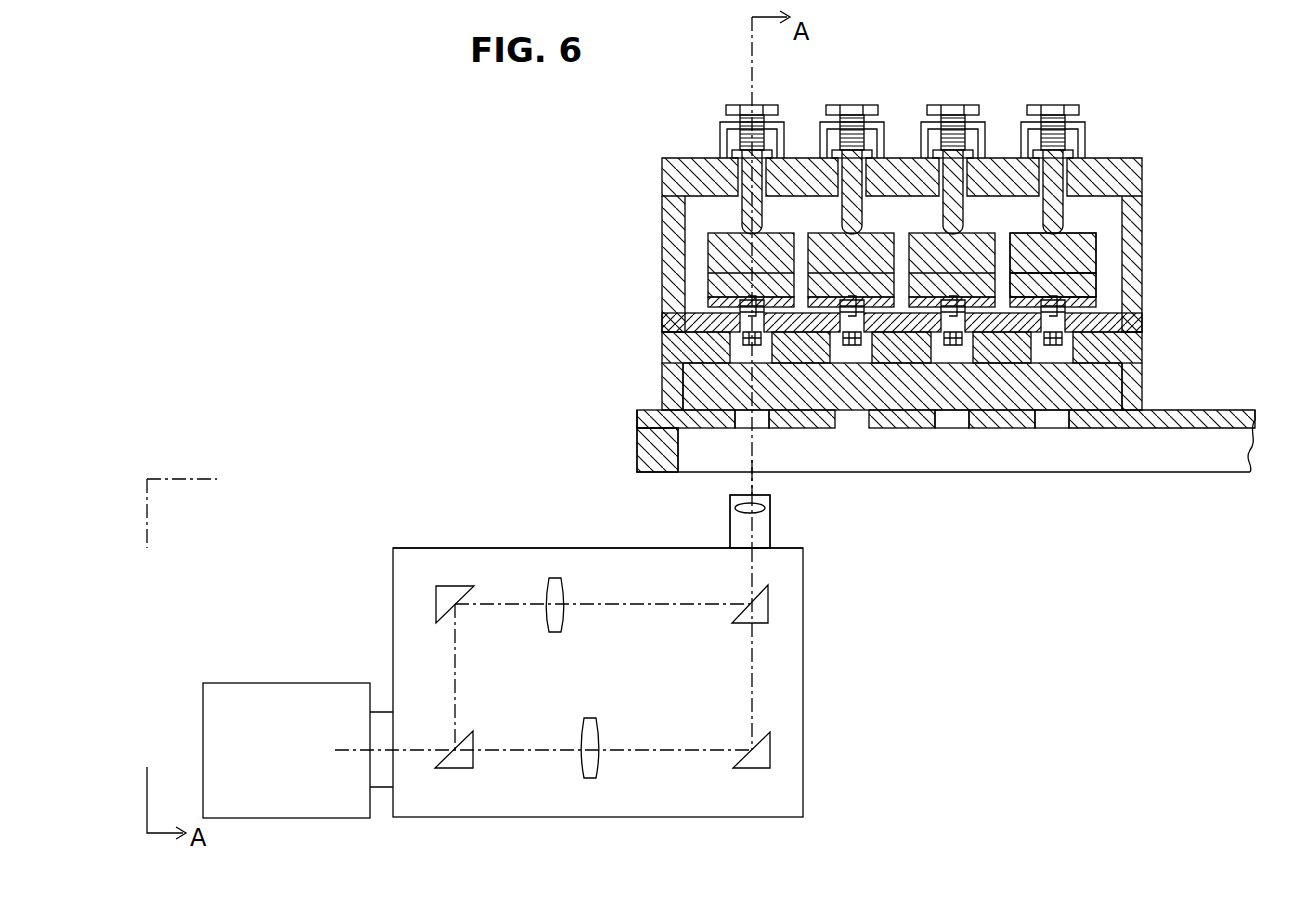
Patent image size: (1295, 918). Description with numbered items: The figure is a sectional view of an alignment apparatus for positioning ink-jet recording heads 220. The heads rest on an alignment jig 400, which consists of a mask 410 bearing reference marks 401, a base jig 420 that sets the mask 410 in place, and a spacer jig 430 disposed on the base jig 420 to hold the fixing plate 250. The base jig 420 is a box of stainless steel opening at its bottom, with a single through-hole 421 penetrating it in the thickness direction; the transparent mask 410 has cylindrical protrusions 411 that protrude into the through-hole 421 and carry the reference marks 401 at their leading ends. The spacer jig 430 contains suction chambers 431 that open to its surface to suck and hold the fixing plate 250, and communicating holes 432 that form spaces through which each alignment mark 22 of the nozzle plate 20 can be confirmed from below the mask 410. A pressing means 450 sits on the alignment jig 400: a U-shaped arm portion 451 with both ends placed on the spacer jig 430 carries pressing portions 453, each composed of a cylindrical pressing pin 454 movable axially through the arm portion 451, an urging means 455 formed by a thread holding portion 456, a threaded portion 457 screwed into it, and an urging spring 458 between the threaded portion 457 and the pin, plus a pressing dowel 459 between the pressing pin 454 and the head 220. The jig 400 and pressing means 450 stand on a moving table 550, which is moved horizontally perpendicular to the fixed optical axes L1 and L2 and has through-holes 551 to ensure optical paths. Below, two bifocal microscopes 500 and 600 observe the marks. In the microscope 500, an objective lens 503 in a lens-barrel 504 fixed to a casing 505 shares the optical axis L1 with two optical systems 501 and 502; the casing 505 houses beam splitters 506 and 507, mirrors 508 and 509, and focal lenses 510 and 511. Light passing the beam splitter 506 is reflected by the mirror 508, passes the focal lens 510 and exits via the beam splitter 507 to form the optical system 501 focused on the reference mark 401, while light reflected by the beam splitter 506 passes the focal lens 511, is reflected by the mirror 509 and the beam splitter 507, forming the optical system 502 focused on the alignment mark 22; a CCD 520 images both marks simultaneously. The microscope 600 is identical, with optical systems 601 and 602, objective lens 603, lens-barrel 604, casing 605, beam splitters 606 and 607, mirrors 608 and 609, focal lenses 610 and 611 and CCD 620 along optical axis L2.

The alignment jig 400 is at (1160, 401).
The pressing means 450 is at (718, 140).
The U-shaped arm portion 451 is at (686, 158).
The pressing portion 453 is at (1050, 36).
The pressing pin 454 is at (990, 112).
The urging means 455 is at (975, 94).
The thread holding portion 456 is at (928, 130).
The threaded portion 457 is at (948, 125).
The urging spring 458 is at (925, 128).
The pressing dowel 459 is at (1100, 240).
The reference mark 401 is at (1098, 290).
The nozzle plate 20 is at (712, 302).
The ink-jet recording head 220 is at (806, 248).
The alignment mark 22 is at (845, 300).
The fixing plate 250 is at (708, 310).
The spacer jig 430 is at (1143, 322).
The base jig 420 is at (1124, 356).
The communicating hole 432 is at (700, 338).
The suction chamber 431 is at (700, 368).
The moving table 550 is at (640, 422).
The through-hole 551 is at (858, 428).
The through-hole 421 is at (932, 400).
The mask 410 is at (1018, 430).
The protrusion 411 is at (1046, 430).
The bifocal microscope 500 is at (889, 652).
The bifocal microscope 600 is at (1075, 642).
The optical system 501 is at (675, 684).
The optical system 601 is at (780, 808).
The optical system 502 is at (543, 613).
The optical system 602 is at (648, 580).
The objective lens 503 is at (819, 518).
The objective lens 603 is at (772, 506).
The lens-barrel 504 is at (831, 521).
The lens-barrel 604 is at (772, 540).
The casing 505 is at (672, 566).
The casing 605 is at (805, 575).
The beam splitter 506 is at (830, 604).
The beam splitter 606 is at (772, 610).
The beam splitter 507 is at (399, 680).
The beam splitter 607 is at (450, 765).
The mirror 508 is at (839, 747).
The mirror 608 is at (772, 750).
The mirror 509 is at (452, 550).
The mirror 609 is at (442, 588).
The focal lens 510 is at (762, 725).
The focal lens 610 is at (598, 730).
The focal lens 511 is at (554, 552).
The focal lens 611 is at (555, 578).
The CCD 520 is at (298, 705).
The CCD 620 is at (245, 693).
The optical axis L1 is at (717, 503).
The optical axis L2 is at (730, 470).